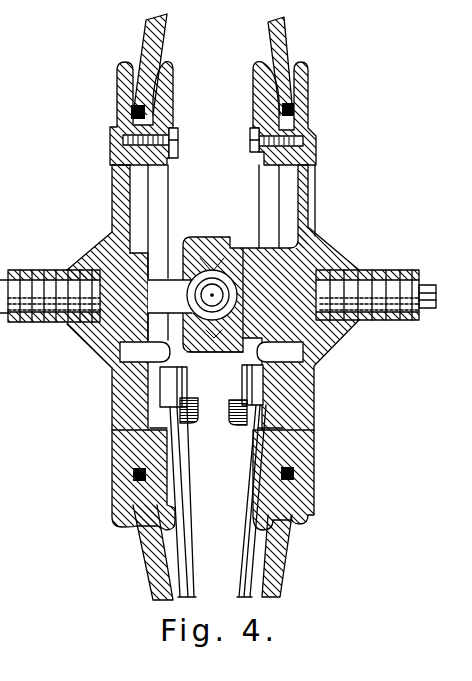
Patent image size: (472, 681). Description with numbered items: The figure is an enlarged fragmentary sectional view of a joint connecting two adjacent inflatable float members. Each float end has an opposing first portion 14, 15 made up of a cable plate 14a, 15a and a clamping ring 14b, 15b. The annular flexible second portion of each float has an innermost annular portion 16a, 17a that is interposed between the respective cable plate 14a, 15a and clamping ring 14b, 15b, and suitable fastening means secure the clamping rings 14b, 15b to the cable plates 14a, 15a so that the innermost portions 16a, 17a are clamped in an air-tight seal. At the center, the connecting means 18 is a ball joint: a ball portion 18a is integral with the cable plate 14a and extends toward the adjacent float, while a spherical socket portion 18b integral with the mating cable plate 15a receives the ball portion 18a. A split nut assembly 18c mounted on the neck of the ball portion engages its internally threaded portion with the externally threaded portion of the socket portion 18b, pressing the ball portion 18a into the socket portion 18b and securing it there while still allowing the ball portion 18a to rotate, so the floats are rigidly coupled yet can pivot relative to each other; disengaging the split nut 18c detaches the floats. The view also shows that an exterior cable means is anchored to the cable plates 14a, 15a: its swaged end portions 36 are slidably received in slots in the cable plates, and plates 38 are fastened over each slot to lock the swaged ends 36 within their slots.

The first portion 14 is at (118, 170).
The cable plate 14a is at (120, 212).
The clamping ring 14b is at (145, 537).
The first portion 15 is at (311, 184).
The cable plate 15a is at (314, 226).
The clamping ring 15b is at (283, 538).
The innermost annular portion 16a is at (132, 111).
The innermost annular portion 17a is at (295, 109).
The connecting means 18 is at (215, 190).
The ball portion 18a is at (204, 280).
The spherical socket portion 18b is at (214, 262).
The split nut assembly 18c is at (204, 353).
The end portions 36 is at (168, 383).
The plates 38 is at (135, 353).